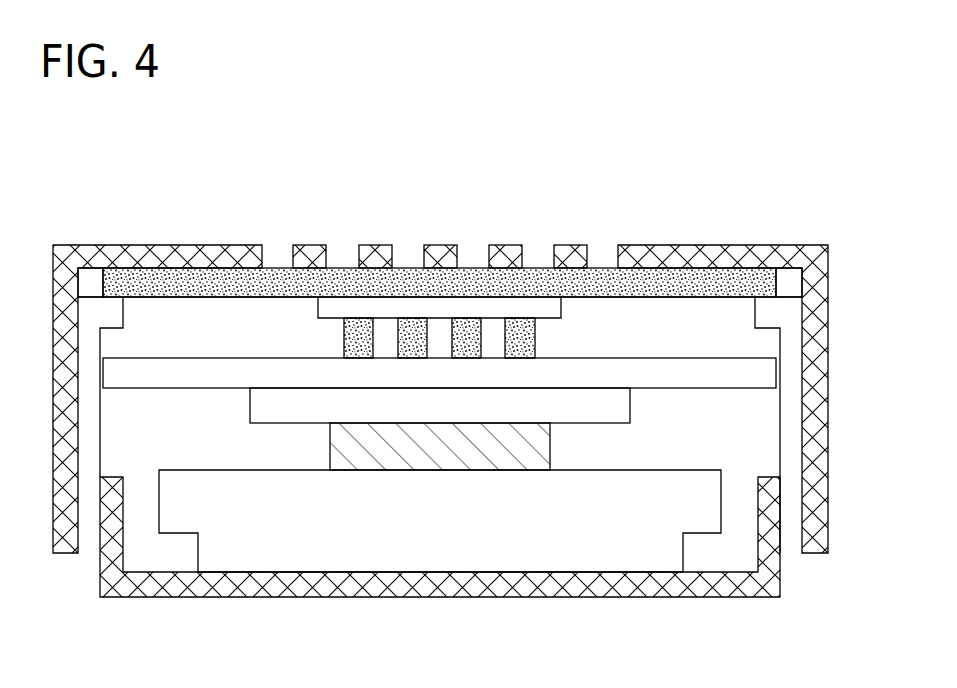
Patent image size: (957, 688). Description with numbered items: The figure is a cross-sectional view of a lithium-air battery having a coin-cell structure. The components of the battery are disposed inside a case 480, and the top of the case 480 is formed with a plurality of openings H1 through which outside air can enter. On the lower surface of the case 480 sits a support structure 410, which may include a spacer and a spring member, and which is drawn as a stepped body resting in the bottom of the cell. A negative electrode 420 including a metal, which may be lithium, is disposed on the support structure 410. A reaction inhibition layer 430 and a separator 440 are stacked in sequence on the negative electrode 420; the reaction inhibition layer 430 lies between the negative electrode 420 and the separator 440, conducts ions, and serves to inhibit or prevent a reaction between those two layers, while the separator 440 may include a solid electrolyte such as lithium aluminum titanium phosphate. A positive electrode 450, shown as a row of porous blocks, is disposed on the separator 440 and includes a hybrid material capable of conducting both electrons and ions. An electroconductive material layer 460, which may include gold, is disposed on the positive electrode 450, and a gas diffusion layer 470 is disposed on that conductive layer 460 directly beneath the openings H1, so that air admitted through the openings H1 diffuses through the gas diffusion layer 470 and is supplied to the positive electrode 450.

The case 480 is at (154, 240).
The openings H1 is at (537, 244).
The gas diffusion layer 470 is at (758, 280).
The electroconductive material layer 460 is at (550, 307).
The positive electrode 450 is at (537, 337).
The separator 440 is at (760, 372).
The reaction inhibition layer 430 is at (615, 403).
The negative electrode 420 is at (555, 440).
The support structure 410 is at (700, 508).